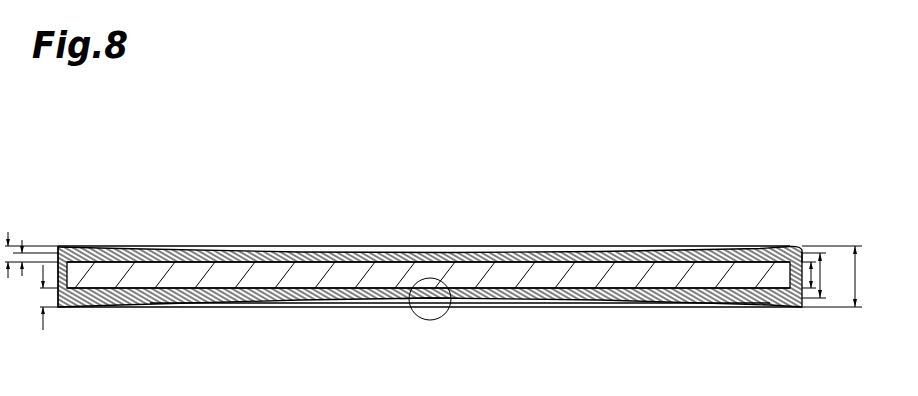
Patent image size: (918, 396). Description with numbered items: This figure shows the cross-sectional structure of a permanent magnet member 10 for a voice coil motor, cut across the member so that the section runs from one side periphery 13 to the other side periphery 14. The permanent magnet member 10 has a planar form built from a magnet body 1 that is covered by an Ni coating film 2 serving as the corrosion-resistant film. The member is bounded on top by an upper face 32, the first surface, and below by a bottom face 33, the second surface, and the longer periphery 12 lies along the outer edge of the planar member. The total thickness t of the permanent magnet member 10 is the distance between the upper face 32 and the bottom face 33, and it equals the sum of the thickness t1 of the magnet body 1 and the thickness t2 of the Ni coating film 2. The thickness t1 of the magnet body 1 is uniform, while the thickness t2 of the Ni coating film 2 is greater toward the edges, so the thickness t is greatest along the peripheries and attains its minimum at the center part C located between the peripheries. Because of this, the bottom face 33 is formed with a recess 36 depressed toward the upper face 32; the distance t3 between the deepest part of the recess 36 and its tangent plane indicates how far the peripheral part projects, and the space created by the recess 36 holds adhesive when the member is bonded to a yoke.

The permanent magnet member 10 is at (663, 200).
The magnet body 1 is at (397, 258).
The Ni coating film 2 is at (557, 250).
The upper face 32 is at (277, 252).
The bottom face 33 is at (278, 305).
The longer periphery 12 is at (342, 248).
The side periphery 13 is at (56, 265).
The side periphery 14 is at (802, 248).
The recess 36 is at (430, 297).
The center part C is at (447, 318).
The thickness t is at (835, 276).
The thickness of the magnet body t1 is at (825, 275).
The thickness of the Ni coating film t2 is at (31, 247).
The distance between the deepest part and tangent plane of the recess t3 is at (59, 301).